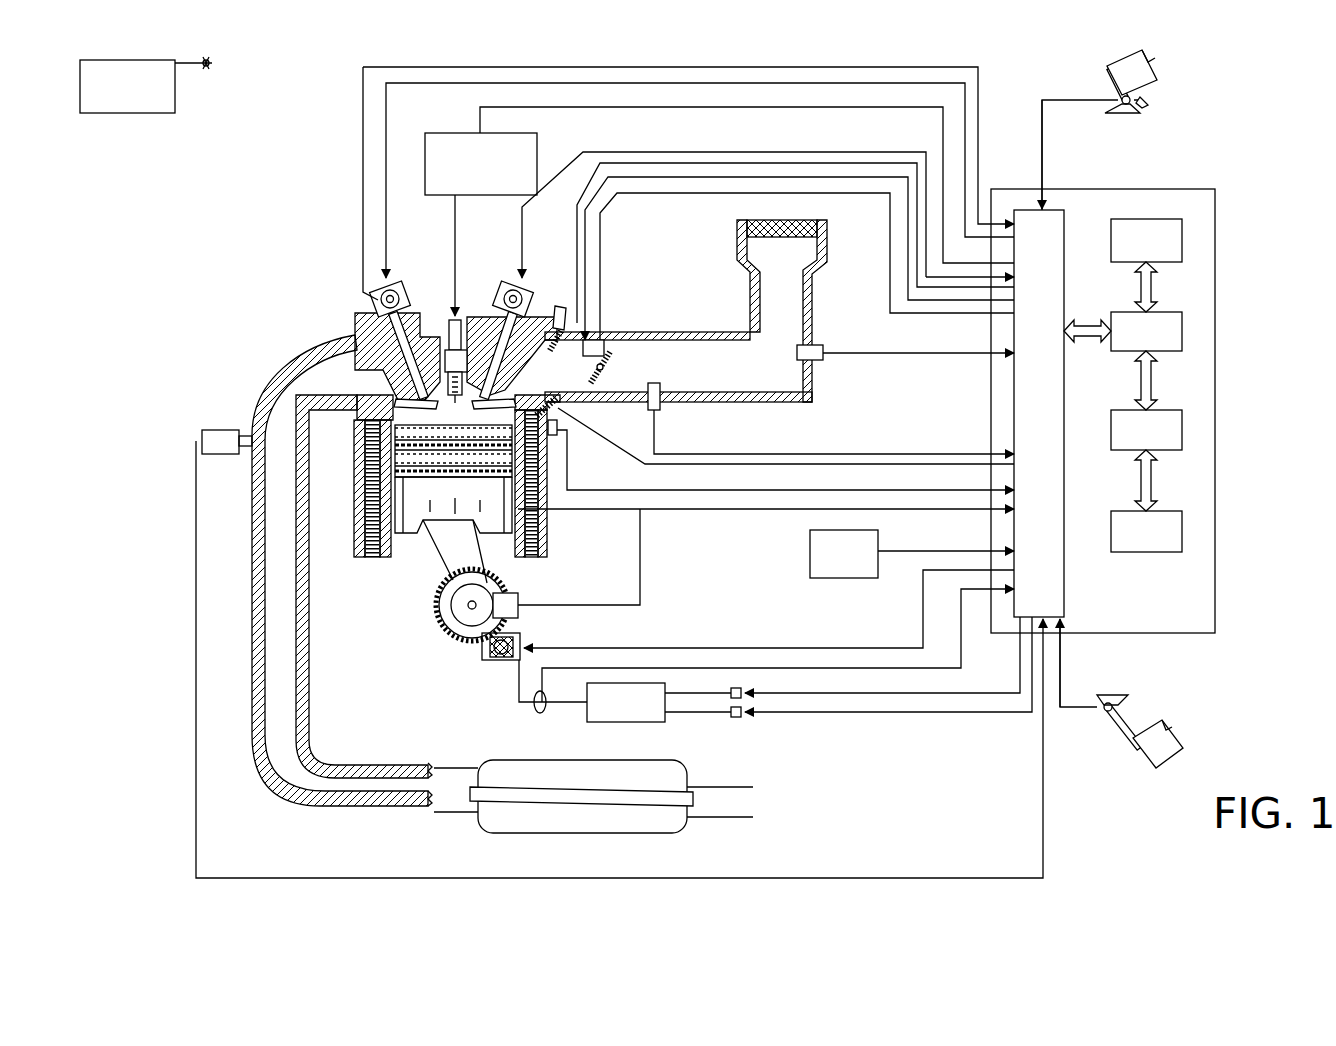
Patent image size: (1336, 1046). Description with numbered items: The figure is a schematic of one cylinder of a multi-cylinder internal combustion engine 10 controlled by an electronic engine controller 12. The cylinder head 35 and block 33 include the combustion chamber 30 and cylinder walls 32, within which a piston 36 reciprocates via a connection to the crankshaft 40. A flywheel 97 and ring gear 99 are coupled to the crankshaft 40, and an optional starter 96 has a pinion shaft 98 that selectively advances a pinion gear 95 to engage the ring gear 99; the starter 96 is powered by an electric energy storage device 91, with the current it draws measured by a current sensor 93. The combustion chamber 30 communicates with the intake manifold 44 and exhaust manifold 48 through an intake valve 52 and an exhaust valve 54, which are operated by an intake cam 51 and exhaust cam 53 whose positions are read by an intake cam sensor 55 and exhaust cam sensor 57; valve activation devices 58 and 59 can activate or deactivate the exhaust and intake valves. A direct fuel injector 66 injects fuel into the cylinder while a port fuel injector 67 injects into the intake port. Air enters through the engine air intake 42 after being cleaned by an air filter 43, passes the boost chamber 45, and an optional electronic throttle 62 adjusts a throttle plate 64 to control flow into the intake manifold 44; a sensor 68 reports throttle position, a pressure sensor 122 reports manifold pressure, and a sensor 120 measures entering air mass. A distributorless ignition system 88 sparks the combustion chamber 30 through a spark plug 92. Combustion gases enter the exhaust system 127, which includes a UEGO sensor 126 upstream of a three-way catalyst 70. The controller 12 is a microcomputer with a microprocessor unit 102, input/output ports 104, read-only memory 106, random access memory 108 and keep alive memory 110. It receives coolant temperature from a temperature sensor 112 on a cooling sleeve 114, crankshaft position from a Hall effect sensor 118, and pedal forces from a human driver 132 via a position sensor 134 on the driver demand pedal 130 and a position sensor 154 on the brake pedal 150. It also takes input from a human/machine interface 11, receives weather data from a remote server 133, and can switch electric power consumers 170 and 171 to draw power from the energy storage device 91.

The internal combustion engine 10 is at (292, 268).
The human/machine interface 11 is at (912, 554).
The electronic engine controller 12 is at (1200, 189).
The combustion chamber 30 is at (412, 413).
The cylinder walls 32 is at (397, 540).
The block 33 is at (355, 450).
The cylinder head 35 is at (348, 316).
The piston 36 is at (437, 510).
The crankshaft 40 is at (455, 640).
The engine air intake 42 is at (713, 280).
The air filter 43 is at (798, 238).
The intake manifold 44 is at (580, 381).
The boost chamber 45 is at (676, 381).
The exhaust manifold 48 is at (339, 385).
The intake cam 51 is at (510, 288).
The intake valve 52 is at (505, 372).
The exhaust cam 53 is at (389, 284).
The exhaust valve 54 is at (362, 366).
The intake cam sensor 55 is at (534, 301).
The exhaust cam sensor 57 is at (378, 300).
The valve activation device 58 is at (399, 298).
The valve activation device 59 is at (505, 300).
The electronic throttle 62 is at (606, 370).
The throttle plate 64 is at (600, 381).
The direct fuel injector 66 is at (560, 432).
The port fuel injector 67 is at (781, 257).
The throttle position sensor 68 is at (602, 341).
The three-way catalyst 70 is at (627, 763).
The distributorless ignition system 88 is at (538, 146).
The electric energy storage device 91 is at (778, 655).
The spark plug 92 is at (458, 317).
The current sensor 93 is at (537, 712).
The pinion gear 95 is at (513, 662).
The starter 96 is at (522, 633).
The flywheel 97 is at (452, 604).
The pinion shaft 98 is at (497, 663).
The ring gear 99 is at (470, 652).
The microprocessor unit 102 is at (1182, 330).
The input/output ports 104 is at (1070, 215).
The read-only memory 106 is at (1182, 235).
The random access memory 108 is at (1182, 425).
The keep alive memory 110 is at (1182, 528).
The temperature sensor 112 is at (781, 455).
The cooling sleeve 114 is at (547, 513).
The Hall effect sensor 118 is at (520, 597).
The air mass sensor 120 is at (820, 345).
The pressure sensor 122 is at (647, 413).
The universal exhaust gas oxygen sensor 126 is at (202, 433).
The exhaust system 127 is at (233, 403).
The driver demand pedal 130 is at (1107, 80).
The human driver 132 is at (1155, 68).
The remote server 133 is at (146, 85).
The position sensor 134 is at (1140, 104).
The brake pedal 150 is at (1131, 750).
The position sensor 154 is at (1098, 702).
The electric power consumer 170 is at (737, 690).
The electric power consumer 171 is at (740, 717).